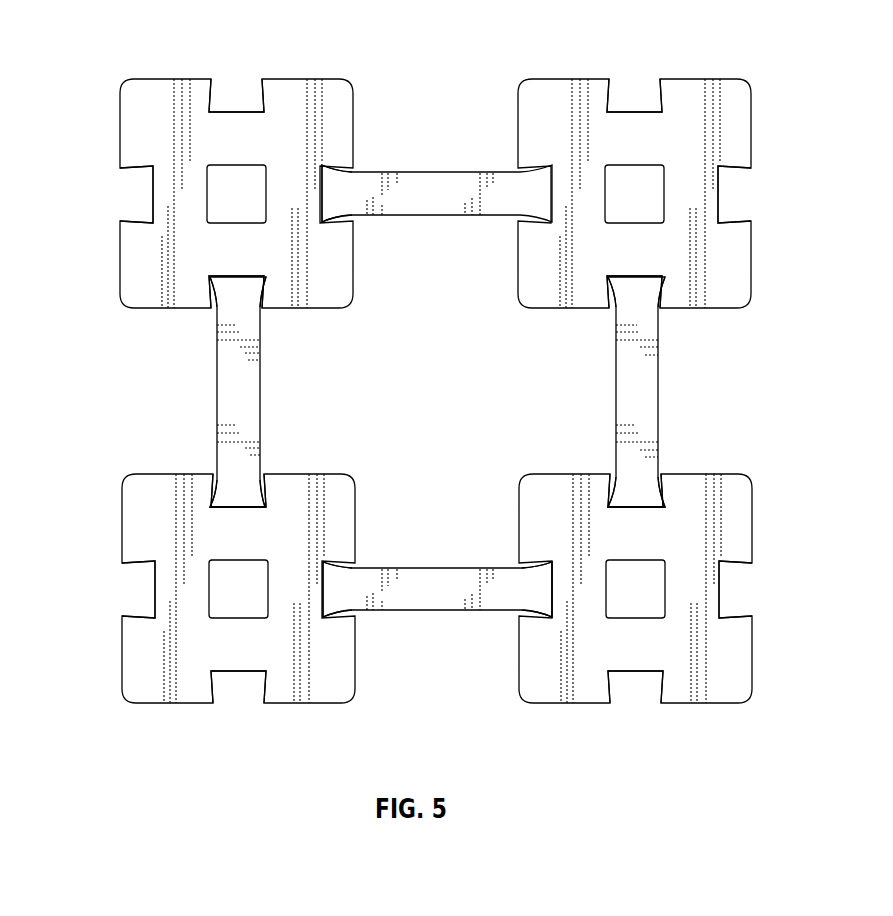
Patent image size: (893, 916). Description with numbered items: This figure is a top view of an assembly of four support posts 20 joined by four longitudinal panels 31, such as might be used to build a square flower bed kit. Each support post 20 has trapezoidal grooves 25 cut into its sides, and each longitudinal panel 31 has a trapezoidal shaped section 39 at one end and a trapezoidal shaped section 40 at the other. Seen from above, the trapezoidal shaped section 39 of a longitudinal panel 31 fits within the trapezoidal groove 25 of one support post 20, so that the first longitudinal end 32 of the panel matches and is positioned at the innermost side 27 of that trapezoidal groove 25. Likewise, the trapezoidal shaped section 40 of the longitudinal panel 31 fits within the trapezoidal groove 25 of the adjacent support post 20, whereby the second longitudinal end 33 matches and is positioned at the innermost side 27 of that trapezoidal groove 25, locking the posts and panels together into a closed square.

The support post 20 is at (120, 137).
The trapezoidal groove 25 is at (238, 99).
The innermost side 27 is at (263, 300).
The longitudinal panel 31 is at (435, 183).
The first longitudinal end 32 is at (250, 279).
The second longitudinal end 33 is at (643, 278).
The trapezoidal shaped section 39 is at (240, 303).
The trapezoidal shaped section 40 is at (340, 188).